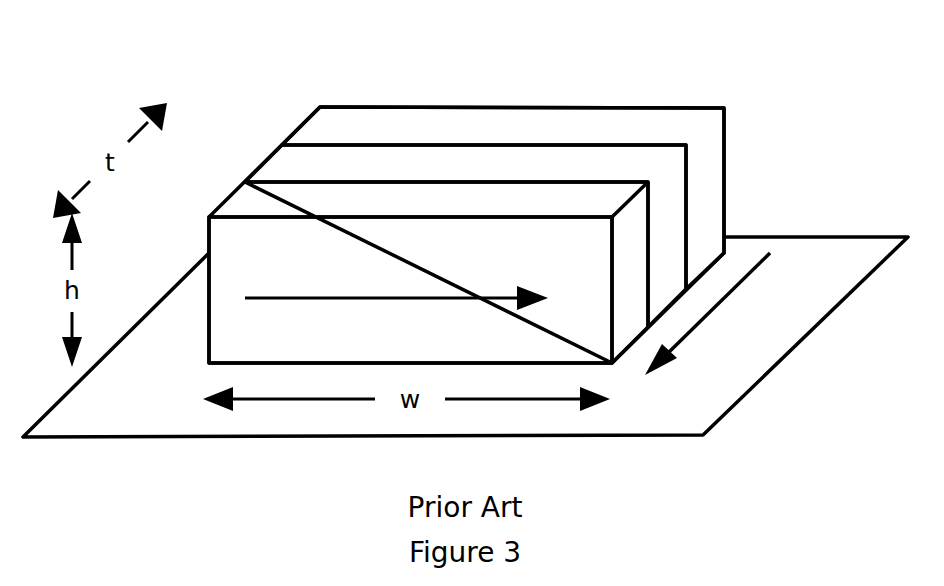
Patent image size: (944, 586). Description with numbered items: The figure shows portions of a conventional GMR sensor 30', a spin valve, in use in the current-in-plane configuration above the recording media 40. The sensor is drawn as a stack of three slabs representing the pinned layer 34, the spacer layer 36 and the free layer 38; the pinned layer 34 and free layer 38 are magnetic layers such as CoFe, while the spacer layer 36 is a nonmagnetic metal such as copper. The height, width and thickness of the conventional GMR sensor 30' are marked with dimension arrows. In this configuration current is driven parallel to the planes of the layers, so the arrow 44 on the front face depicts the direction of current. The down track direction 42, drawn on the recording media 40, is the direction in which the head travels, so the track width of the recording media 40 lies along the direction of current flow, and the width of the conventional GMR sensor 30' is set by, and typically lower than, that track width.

The conventional GMR sensor 30' is at (466, 191).
The pinned layer 34 is at (650, 108).
The spacer layer 36 is at (260, 160).
The free layer 38 is at (227, 198).
The recording media 40 is at (502, 435).
The down track direction 42 is at (747, 267).
The arrow 44 is at (320, 297).